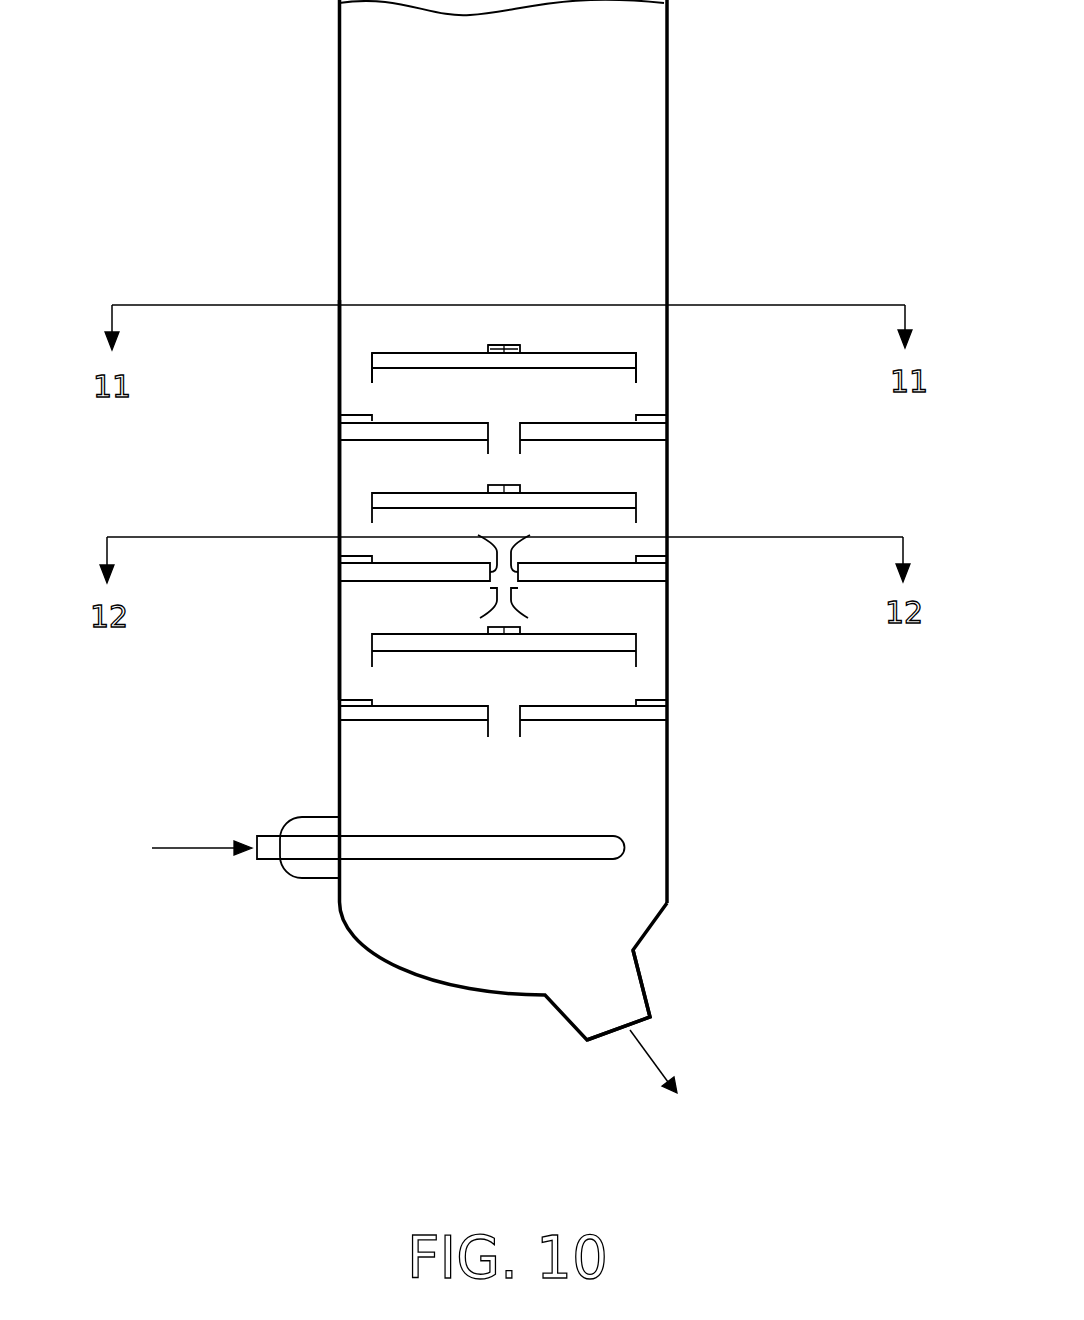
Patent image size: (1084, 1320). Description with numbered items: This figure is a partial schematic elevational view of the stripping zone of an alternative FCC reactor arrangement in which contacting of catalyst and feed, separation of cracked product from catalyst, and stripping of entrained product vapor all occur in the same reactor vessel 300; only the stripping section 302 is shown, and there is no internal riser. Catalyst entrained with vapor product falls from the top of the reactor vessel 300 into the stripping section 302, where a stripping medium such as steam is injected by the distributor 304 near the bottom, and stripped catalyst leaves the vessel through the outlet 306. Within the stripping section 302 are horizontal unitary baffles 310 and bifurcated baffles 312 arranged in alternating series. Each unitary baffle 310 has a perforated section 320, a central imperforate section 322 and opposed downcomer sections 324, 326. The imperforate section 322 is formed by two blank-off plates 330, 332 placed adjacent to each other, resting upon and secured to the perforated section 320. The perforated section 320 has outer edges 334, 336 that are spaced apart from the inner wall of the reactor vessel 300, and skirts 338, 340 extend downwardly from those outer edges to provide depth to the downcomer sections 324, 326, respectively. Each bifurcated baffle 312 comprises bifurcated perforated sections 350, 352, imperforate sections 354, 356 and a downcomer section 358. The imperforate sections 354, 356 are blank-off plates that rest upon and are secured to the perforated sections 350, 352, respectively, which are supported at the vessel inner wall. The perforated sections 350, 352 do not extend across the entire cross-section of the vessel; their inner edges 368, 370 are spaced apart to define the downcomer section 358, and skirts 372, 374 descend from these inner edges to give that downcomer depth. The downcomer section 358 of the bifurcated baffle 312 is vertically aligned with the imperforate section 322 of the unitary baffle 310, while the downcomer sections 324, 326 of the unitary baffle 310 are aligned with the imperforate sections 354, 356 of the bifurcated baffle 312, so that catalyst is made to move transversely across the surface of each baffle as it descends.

The reactor vessel 300 is at (684, 50).
The stripping section 302 is at (326, 506).
The distributor 304 is at (422, 847).
The outlet 306 is at (645, 978).
The unitary baffle 310 is at (496, 286).
The bifurcated baffle 312 is at (509, 610).
The perforated section 320 is at (385, 354).
The imperforate section 322 is at (498, 345).
The downcomer section 324 is at (648, 355).
The downcomer section 326 is at (357, 360).
The blank-off plate 330 is at (512, 345).
The blank-off plate 332 is at (490, 345).
The outer edge 334 is at (637, 363).
The outer edge 336 is at (370, 364).
The skirt 338 is at (637, 382).
The skirt 340 is at (372, 383).
The bifurcated perforated section 350 is at (593, 572).
The bifurcated perforated section 352 is at (413, 573).
The imperforate section 354 is at (648, 556).
The imperforate section 356 is at (362, 557).
The downcomer section 358 is at (503, 738).
The inner edge 368 is at (530, 535).
The inner edge 370 is at (478, 535).
The skirt 372 is at (528, 618).
The skirt 374 is at (480, 618).